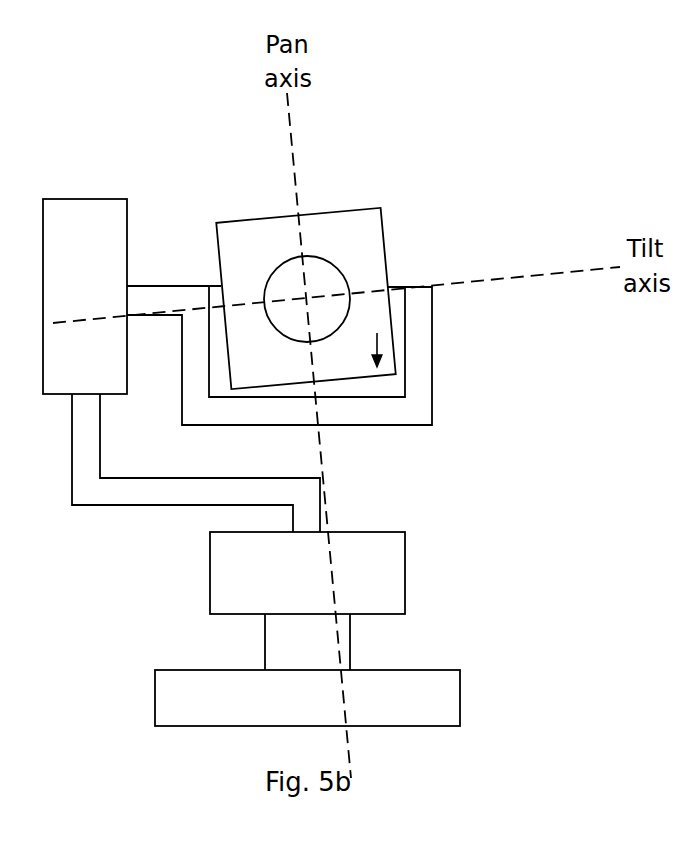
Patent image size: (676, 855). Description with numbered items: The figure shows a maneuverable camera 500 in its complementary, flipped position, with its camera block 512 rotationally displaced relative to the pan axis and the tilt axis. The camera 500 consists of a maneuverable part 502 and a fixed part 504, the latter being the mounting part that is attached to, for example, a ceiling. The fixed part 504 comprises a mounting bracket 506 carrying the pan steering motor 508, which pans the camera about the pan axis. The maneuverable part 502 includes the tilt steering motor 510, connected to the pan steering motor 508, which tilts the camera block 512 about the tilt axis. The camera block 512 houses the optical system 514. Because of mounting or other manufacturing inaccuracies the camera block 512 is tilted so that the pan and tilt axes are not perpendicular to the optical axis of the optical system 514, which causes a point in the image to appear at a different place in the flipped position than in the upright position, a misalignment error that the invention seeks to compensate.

The camera 500 is at (330, 178).
The maneuverable part 502 is at (525, 170).
The fixed part 504 is at (525, 534).
The mounting bracket 506 is at (330, 703).
The pan steering motor 508 is at (330, 585).
The tilt steering motor 510 is at (110, 313).
The camera block 512 is at (283, 374).
The optical system 514 is at (318, 323).